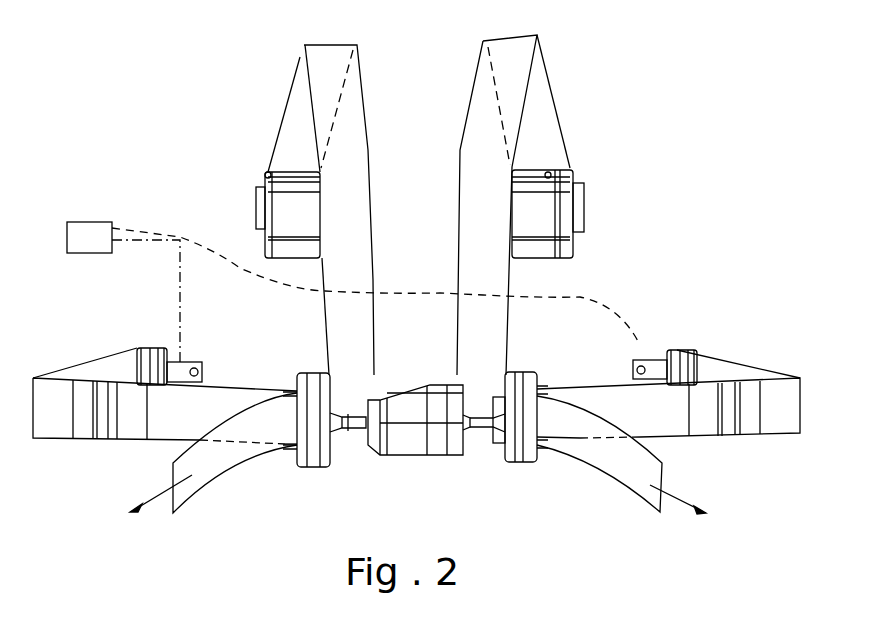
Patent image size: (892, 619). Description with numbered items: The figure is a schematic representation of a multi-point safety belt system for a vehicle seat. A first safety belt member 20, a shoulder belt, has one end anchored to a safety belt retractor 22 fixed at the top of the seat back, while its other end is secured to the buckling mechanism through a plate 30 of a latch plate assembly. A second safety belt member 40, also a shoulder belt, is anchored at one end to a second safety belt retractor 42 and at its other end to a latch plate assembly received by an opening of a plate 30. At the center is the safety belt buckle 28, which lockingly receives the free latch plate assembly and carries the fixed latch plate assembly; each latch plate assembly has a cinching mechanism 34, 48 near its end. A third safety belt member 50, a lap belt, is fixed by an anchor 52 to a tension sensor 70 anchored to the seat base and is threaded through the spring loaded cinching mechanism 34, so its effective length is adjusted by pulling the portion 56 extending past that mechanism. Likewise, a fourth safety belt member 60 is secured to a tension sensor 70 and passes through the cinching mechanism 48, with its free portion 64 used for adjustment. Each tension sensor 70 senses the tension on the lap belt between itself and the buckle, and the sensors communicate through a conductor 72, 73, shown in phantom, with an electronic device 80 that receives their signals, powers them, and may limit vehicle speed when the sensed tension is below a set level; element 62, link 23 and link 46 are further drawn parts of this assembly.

The first safety belt member 20 is at (290, 140).
The safety belt retractor 22 is at (278, 215).
The second safety belt member 40 is at (547, 128).
The second safety belt retractor 42 is at (572, 212).
The electronic device 80 is at (83, 228).
The conductor 73 is at (143, 228).
The conductor 72 is at (182, 268).
The third safety belt member 50 is at (52, 427).
The fourth safety belt member 60 is at (787, 420).
The tension sensor 70 is at (164, 336).
The left sensor box 62 is at (195, 362).
The anchor 52 is at (640, 358).
The portion of the third safety belt member 56 is at (200, 475).
The portion of the fourth safety belt member 64 is at (626, 470).
The cinching mechanism 34 is at (310, 466).
The plate 30 is at (360, 430).
The left link 23 is at (348, 440).
The safety belt buckle 28 is at (415, 433).
The right link 46 is at (472, 445).
The cinching mechanism 48 is at (522, 462).